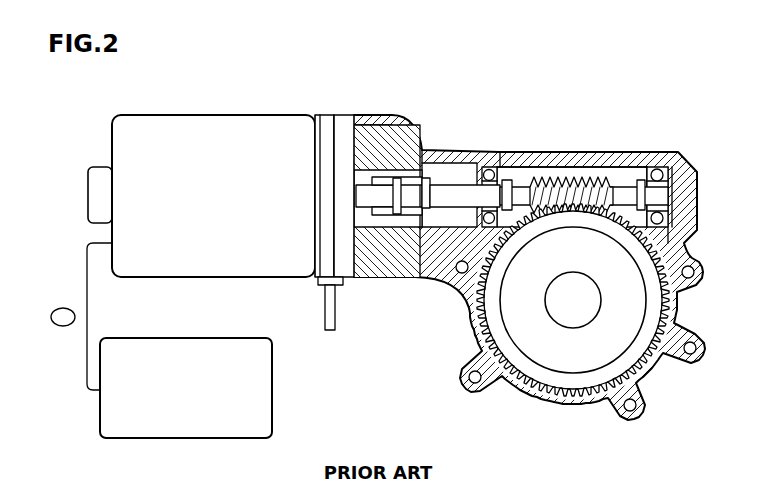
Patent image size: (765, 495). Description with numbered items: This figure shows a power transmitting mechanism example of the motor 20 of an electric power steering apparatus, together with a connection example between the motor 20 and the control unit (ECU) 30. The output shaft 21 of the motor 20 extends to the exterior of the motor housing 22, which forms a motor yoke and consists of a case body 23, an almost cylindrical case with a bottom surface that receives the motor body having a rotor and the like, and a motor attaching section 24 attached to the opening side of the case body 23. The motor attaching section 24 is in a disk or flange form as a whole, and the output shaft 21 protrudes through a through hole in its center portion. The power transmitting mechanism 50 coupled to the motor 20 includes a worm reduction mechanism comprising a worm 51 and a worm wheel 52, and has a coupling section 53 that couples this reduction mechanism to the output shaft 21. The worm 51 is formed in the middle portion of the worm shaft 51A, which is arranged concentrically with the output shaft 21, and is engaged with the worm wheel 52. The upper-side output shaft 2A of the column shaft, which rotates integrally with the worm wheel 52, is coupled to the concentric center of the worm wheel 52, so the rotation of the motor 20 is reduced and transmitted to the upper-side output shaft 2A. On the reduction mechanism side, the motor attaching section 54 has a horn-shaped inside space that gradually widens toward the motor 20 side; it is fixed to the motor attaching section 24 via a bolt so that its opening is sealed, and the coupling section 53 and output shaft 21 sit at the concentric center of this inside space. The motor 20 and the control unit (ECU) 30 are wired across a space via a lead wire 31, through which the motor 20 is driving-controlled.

The upper-side output shaft 2A is at (556, 322).
The motor 20 is at (248, 287).
The output shaft 21 is at (366, 195).
The motor housing 22 is at (320, 195).
The case body 23 is at (297, 118).
The motor attaching section 24 is at (342, 118).
The control unit (ECU) 30 is at (162, 346).
The lead wire 31 is at (85, 293).
The power transmitting mechanism 50 is at (575, 142).
The worm 51 is at (597, 185).
The worm shaft 51A is at (463, 193).
The worm wheel 52 is at (474, 307).
The coupling section 53 is at (435, 176).
The motor attaching section 54 is at (388, 118).